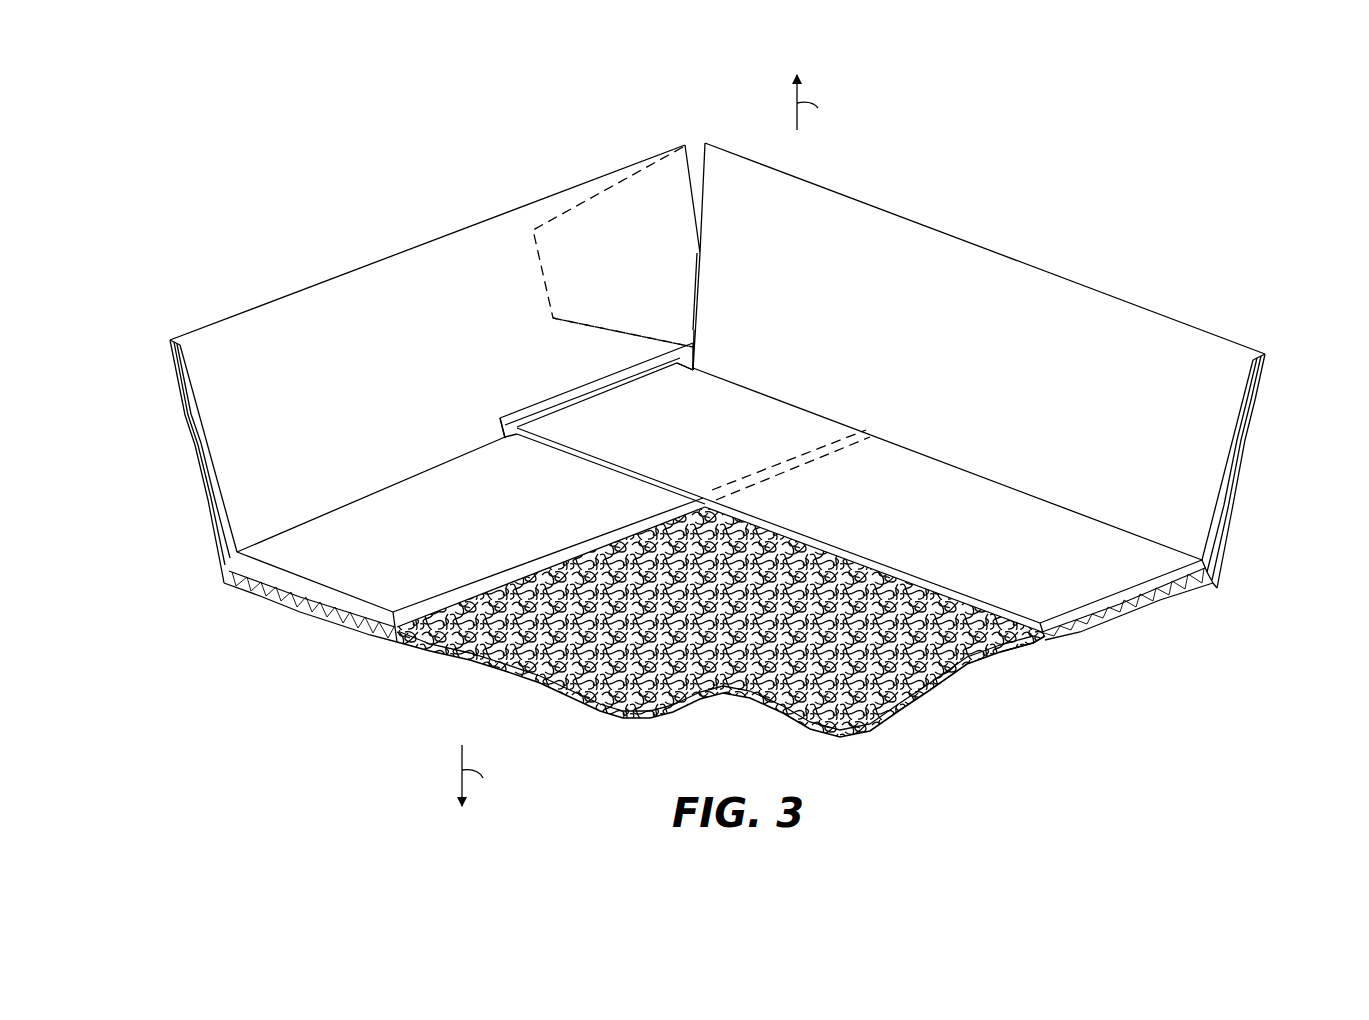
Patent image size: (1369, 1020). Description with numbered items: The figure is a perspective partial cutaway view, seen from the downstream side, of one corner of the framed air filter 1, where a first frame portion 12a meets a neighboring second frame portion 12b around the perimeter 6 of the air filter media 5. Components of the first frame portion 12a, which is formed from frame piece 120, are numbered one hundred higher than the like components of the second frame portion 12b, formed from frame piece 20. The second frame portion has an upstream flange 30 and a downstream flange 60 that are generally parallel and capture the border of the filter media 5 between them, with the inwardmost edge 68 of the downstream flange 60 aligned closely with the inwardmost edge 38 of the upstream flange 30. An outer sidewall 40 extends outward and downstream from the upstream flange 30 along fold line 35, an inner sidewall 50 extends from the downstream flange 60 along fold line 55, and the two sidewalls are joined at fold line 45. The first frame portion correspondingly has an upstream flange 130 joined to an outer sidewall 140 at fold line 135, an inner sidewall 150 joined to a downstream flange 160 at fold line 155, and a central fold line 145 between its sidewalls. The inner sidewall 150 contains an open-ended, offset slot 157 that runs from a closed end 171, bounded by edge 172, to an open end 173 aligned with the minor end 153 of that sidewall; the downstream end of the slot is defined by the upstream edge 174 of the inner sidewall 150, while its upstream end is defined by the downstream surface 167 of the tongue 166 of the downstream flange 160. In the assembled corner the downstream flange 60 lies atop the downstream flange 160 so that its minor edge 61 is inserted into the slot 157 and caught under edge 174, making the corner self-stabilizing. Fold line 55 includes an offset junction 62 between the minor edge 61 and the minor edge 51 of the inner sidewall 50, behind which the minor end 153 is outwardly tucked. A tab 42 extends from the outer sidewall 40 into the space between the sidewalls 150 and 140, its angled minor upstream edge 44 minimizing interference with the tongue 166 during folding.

The framed air filter 1 is at (283, 96).
The first frame portion 12a is at (418, 245).
The second frame portion 12b is at (868, 205).
The frame piece 120 is at (517, 207).
The inner sidewall 150 is at (322, 318).
The central fold line 145 is at (183, 330).
The outer sidewall 140 is at (180, 395).
The frame piece 20 is at (978, 243).
The inner sidewall 50 is at (1078, 330).
The fold line 45 is at (1263, 352).
The outer sidewall 40 is at (1262, 435).
The minor edge of inner sidewall 51 is at (693, 318).
The minor end of inner sidewall 153 is at (705, 342).
The open end of slot 173 is at (695, 365).
The tab 42 is at (577, 233).
The minor upstream edge of tab 44 is at (598, 330).
The fold line 155 is at (254, 541).
The fold line 55 is at (1168, 543).
The downstream flange 160 is at (392, 585).
The downstream flange 60 is at (1050, 588).
The upstream edge of inner sidewall 174 is at (502, 418).
The edge of inner sidewall 172 is at (502, 436).
The minor edge of downstream flange 61 is at (587, 398).
The offset junction 62 is at (680, 368).
The open-ended offset slot 157 is at (530, 412).
The tongue 166 is at (516, 432).
The downstream surface of tongue 167 is at (513, 432).
The closed end of slot 171 is at (508, 438).
The fold line 135 is at (222, 575).
The upstream flange 130 is at (330, 618).
The fold line 35 is at (1218, 588).
The upstream flange 30 is at (1128, 620).
The perimeter of filter media 6 is at (1195, 583).
The inwardmost edge of upstream flange 38 is at (1036, 652).
The air filter media 5 is at (720, 698).
The inwardmost edge of downstream flange 68 is at (967, 670).